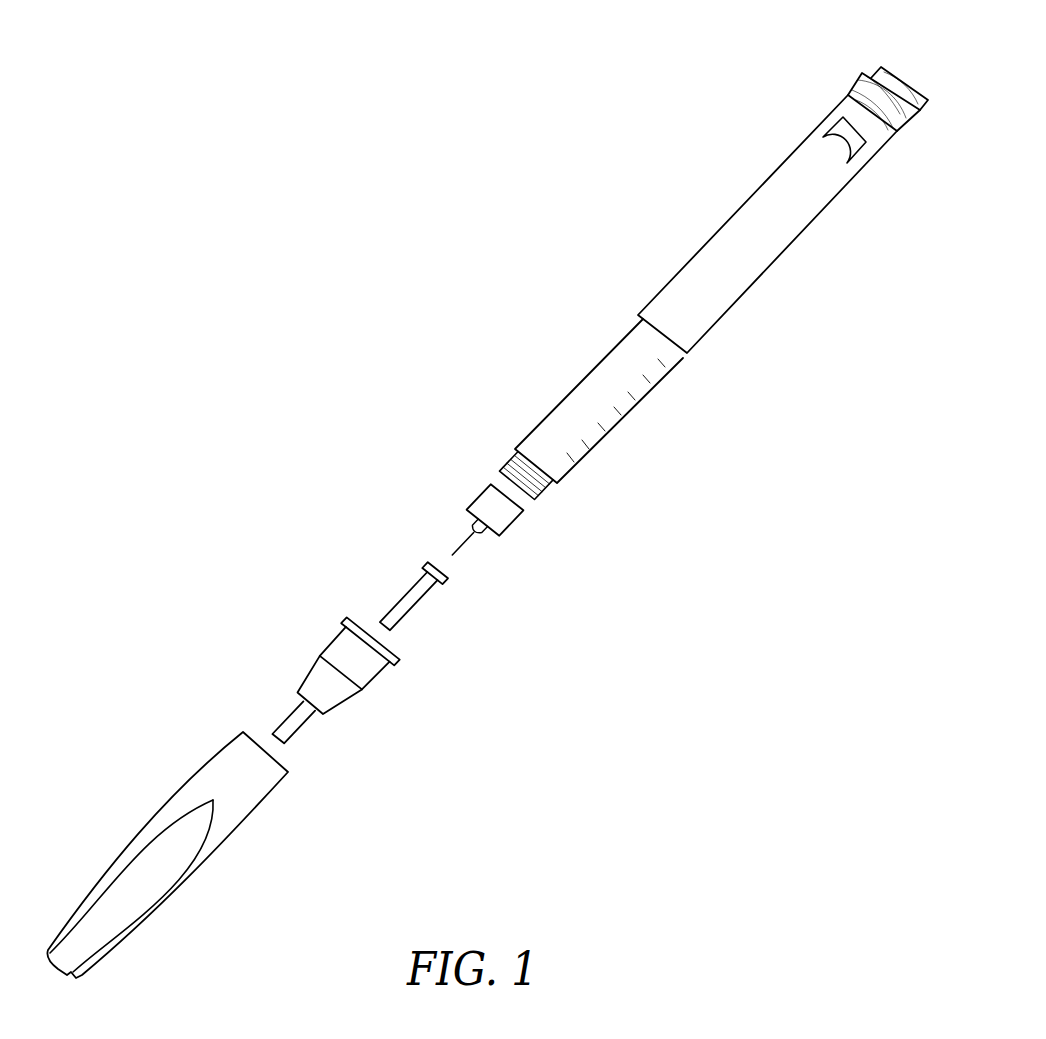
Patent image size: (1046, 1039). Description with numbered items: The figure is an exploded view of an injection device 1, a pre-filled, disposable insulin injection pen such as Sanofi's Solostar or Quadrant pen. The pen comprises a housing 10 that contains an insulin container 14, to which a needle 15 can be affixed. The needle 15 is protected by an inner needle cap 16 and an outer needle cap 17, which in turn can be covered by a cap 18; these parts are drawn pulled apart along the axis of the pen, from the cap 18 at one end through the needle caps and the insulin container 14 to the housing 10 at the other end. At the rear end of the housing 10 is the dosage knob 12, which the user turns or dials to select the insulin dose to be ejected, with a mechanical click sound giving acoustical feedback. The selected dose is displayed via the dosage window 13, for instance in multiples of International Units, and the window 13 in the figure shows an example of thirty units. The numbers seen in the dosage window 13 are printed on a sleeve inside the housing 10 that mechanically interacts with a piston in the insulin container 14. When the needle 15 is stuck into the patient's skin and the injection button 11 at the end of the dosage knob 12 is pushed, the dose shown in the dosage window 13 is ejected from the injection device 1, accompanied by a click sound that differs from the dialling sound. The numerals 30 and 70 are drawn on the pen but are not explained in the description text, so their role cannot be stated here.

The injection device 1 is at (560, 226).
The housing 10 is at (729, 230).
The injection button 11 is at (909, 70).
The dosage knob 12 is at (842, 80).
The dosage window 13 is at (854, 168).
The insulin container 14 is at (567, 412).
The needle 15 is at (484, 501).
The inner needle cap 16 is at (407, 599).
The outer needle cap 17 is at (340, 651).
The cap 18 is at (218, 769).
The dose indication 30 is at (851, 156).
The indicator / sleeve 70 is at (867, 117).